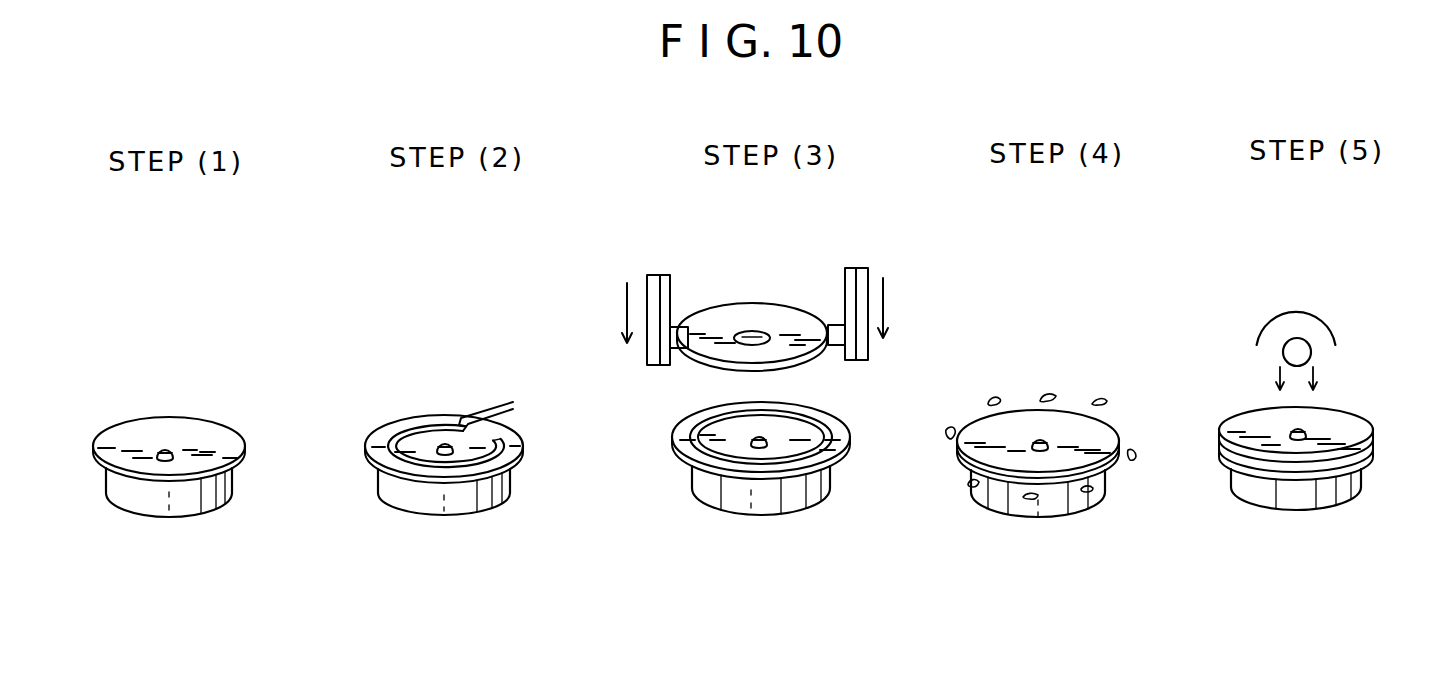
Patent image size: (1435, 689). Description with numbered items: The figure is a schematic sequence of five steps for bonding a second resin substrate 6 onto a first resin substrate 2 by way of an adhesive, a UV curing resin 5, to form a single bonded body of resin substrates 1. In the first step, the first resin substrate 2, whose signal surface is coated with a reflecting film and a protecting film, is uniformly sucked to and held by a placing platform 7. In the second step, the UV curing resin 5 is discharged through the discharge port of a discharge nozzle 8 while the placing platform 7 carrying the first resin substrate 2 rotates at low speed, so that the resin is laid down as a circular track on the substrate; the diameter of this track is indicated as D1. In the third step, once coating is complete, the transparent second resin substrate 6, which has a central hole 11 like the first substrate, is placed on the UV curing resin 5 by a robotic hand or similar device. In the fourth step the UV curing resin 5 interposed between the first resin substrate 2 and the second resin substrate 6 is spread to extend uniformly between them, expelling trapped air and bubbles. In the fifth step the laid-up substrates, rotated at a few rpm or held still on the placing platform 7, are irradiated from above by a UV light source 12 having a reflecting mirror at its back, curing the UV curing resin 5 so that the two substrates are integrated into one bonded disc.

The resin substrates 1 is at (162, 448).
The first resin substrate 2 is at (216, 433).
The UV curing resin 5 is at (408, 428).
The second resin substrate 6 is at (770, 312).
The placing platform 7 is at (183, 505).
The discharge nozzle 8 is at (484, 408).
The central holes 11 is at (745, 333).
The UV light source 12 is at (1318, 355).
The diameter D1 is at (522, 447).